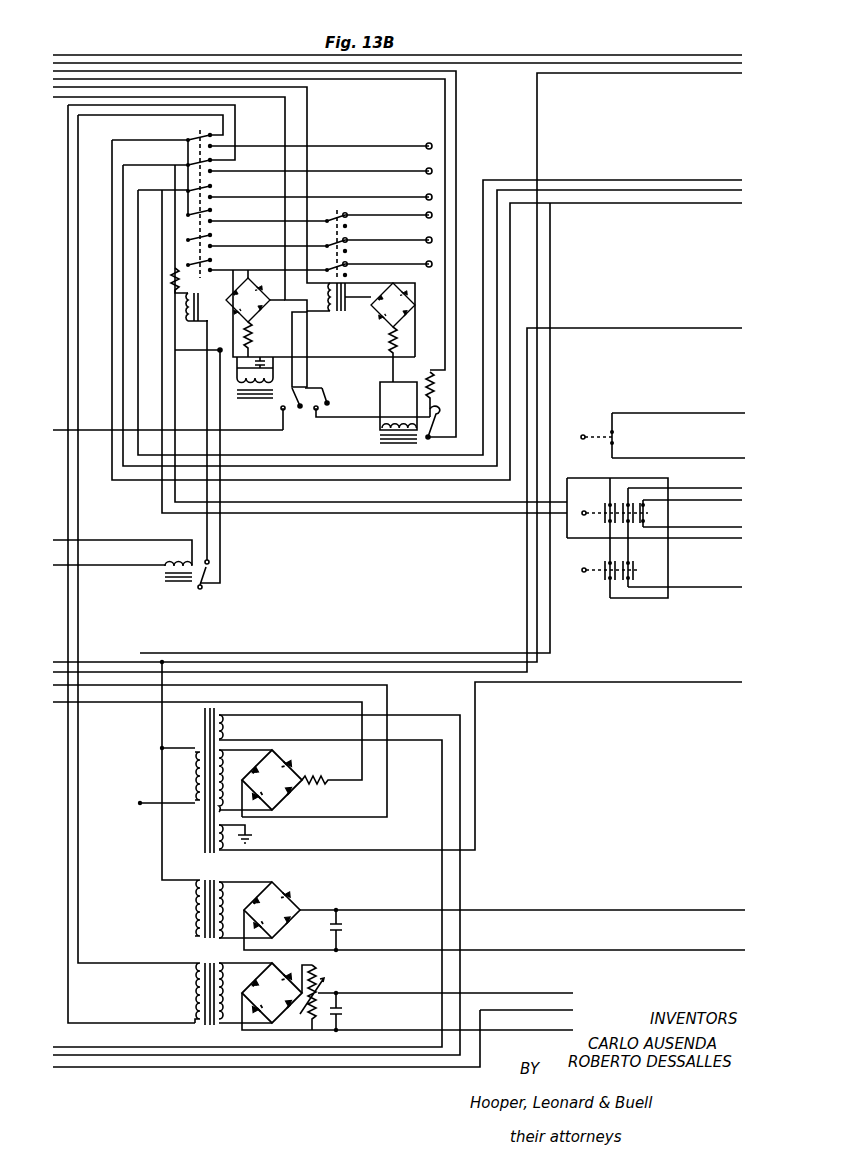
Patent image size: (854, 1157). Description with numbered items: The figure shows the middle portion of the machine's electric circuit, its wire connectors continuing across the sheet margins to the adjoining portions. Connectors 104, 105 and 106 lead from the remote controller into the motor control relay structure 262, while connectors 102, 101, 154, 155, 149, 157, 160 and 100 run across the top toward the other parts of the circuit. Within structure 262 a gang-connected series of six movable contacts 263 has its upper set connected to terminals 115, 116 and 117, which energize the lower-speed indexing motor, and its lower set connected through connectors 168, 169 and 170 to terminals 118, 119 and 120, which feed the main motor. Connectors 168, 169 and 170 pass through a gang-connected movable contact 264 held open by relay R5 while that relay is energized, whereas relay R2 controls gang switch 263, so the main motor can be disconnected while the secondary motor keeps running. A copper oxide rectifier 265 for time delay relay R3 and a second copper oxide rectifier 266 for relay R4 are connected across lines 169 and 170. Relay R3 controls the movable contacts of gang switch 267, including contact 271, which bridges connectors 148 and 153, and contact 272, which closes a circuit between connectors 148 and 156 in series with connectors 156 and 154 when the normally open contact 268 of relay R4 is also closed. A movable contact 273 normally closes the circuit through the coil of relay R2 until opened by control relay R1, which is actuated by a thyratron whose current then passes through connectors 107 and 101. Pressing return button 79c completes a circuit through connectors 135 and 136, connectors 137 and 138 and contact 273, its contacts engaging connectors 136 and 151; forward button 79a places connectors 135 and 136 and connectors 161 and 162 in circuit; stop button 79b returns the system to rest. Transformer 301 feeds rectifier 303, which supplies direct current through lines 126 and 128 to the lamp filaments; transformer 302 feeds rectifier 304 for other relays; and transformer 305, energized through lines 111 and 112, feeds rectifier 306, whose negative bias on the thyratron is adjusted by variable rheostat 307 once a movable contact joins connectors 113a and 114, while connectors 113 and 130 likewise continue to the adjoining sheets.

The supply line 102 is at (88, 57).
The connector 101 is at (130, 57).
The connector 154 is at (172, 48).
The connector 155 is at (53, 80).
The connector 149 is at (53, 88).
The conductor 157 is at (53, 97).
The line connector 160 is at (742, 73).
The line 100 is at (742, 328).
The connector 104 is at (148, 128).
The connector 105 is at (158, 153).
The connector 106 is at (742, 180).
The motor control relay structure 262 is at (279, 199).
The gang switch 263 is at (212, 190).
The gang-connected movable contact 264 is at (340, 240).
The connector 168 is at (266, 211).
The connector 169 is at (273, 236).
The connector 170 is at (262, 260).
The terminal 115 is at (420, 134).
The terminal 116 is at (420, 160).
The terminal 117 is at (420, 185).
The terminal 118 is at (420, 207).
The terminal 119 is at (420, 232).
The terminal 120 is at (420, 256).
The relay R2 is at (202, 324).
The copper oxide rectifier 265 is at (234, 302).
The relay R5 is at (347, 303).
The copper oxide rectifier 266 is at (386, 292).
The connector 148 is at (307, 328).
The time delay relay R3 is at (260, 404).
The gang switch 267 is at (312, 386).
The movable contact 272 is at (327, 403).
The movable contact 271 is at (300, 427).
The connector 153 is at (53, 430).
The movable contact 268 is at (410, 400).
The relay R4 is at (380, 444).
The connector 156 is at (334, 428).
The stop button 79b is at (582, 437).
The forward button 79a is at (585, 510).
The return button 79c is at (583, 570).
The connector 161 is at (742, 488).
The connector 162 is at (742, 538).
The connector 151 is at (742, 587).
The connector 136 is at (290, 504).
The connector 135 is at (372, 512).
The connector 137 is at (205, 523).
The connector 138 is at (222, 544).
The movable contact 273 is at (189, 587).
The connector 107 is at (54, 568).
The control relay R1 is at (162, 582).
The connector line 111 is at (68, 620).
The connector line 112 is at (80, 620).
The connector line 128 is at (55, 685).
The connector line 126 is at (55, 702).
The conductor 130 is at (742, 682).
The transformer 301 is at (256, 881).
The copper oxide rectifier 303 is at (282, 786).
The second transformer 302 is at (221, 898).
The rectifier 304 is at (300, 906).
The third transformer 305 is at (210, 994).
The rectifier 306 is at (248, 972).
The variable rheostat 307 is at (324, 996).
The conductor 113 is at (573, 993).
The connector 113a is at (573, 1010).
The connector 114 is at (573, 1030).